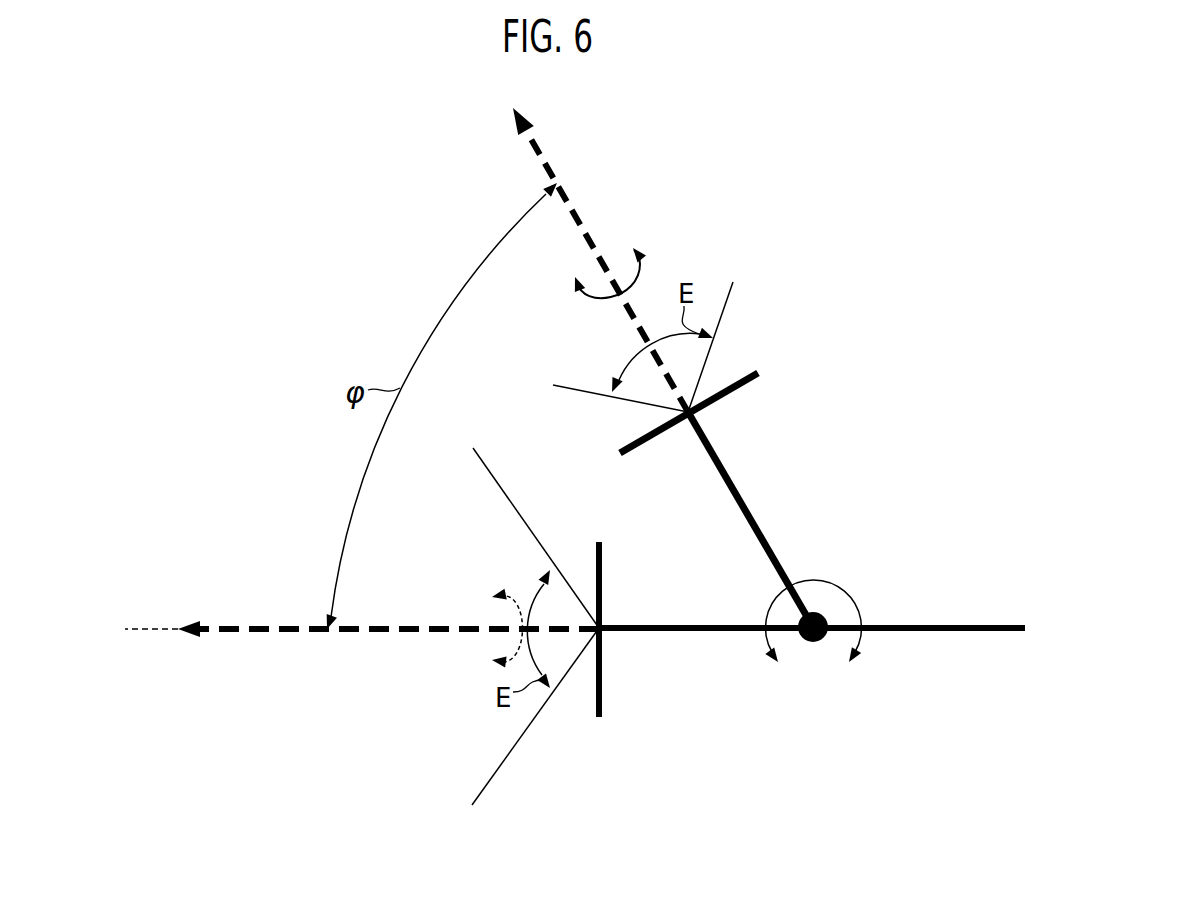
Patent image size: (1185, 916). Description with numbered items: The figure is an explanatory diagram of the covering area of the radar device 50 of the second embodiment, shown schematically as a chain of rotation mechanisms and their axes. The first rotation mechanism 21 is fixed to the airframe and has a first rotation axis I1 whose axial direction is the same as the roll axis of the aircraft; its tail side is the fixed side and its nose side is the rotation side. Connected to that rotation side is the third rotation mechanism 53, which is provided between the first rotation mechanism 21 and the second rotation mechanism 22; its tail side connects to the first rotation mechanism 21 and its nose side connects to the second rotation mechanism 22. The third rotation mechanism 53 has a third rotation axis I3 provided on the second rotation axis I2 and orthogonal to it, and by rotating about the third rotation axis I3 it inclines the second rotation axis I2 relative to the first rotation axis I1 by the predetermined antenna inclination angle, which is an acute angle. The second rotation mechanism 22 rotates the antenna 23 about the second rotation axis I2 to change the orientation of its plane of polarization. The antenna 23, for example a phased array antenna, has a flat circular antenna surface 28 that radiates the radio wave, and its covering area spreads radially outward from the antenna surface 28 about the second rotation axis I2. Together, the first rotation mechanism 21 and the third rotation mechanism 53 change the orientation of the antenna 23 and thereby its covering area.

The first rotation mechanism 21 is at (940, 624).
The second rotation mechanism 22 is at (758, 514).
The antenna 23 is at (741, 390).
The antenna surface 28 is at (752, 372).
The radar device 50 is at (812, 191).
The third rotation mechanism 53 is at (817, 658).
The first rotation axis I1 is at (160, 626).
The second rotation axis I2 is at (570, 200).
The third rotation axis I3 is at (818, 614).